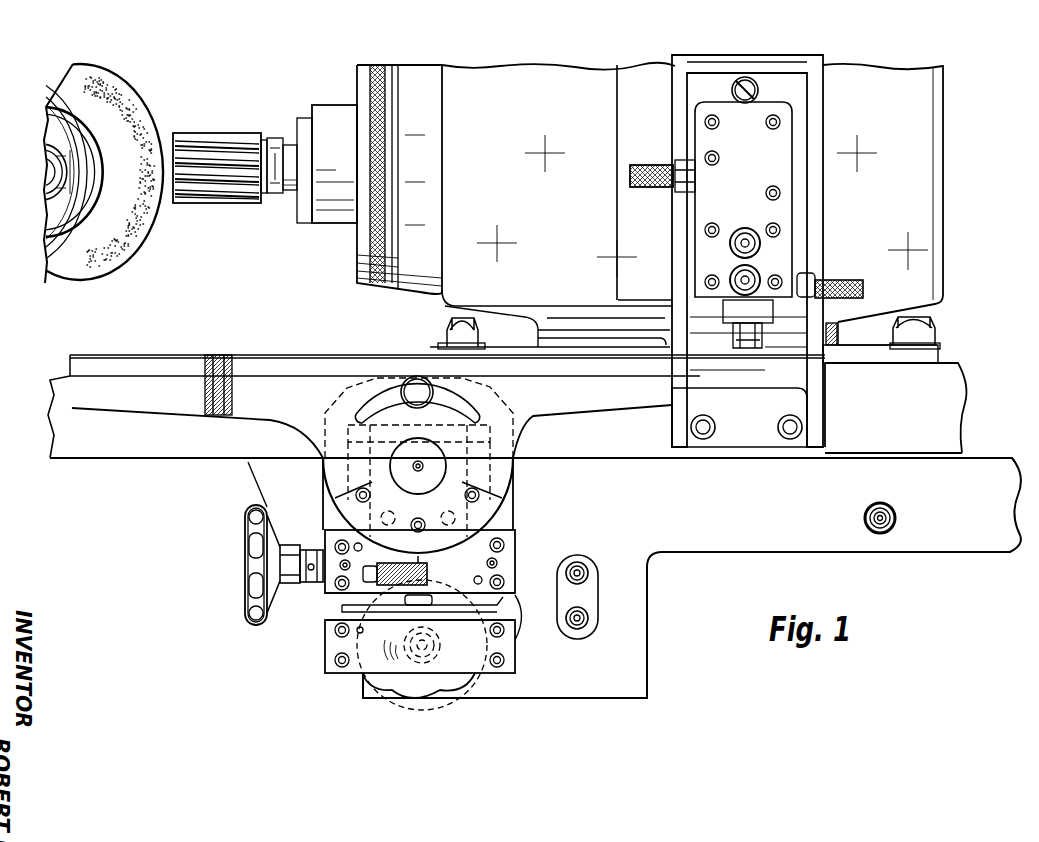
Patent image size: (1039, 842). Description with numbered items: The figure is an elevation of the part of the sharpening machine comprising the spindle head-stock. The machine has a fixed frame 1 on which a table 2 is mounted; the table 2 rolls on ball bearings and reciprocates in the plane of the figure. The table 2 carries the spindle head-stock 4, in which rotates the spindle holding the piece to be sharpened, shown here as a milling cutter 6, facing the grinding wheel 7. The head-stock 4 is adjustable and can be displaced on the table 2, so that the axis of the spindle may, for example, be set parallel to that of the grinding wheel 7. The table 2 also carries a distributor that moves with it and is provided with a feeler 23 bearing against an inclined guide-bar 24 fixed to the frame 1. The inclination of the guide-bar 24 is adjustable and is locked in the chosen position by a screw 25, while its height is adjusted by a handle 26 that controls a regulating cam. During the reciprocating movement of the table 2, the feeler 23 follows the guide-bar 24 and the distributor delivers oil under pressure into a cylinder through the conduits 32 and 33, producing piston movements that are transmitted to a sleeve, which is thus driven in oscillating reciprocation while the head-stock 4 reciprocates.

The fixed frame 1 is at (985, 467).
The table 2 is at (947, 390).
The spindle head-stock 4 is at (922, 134).
The milling cutter 6 is at (215, 142).
The grinding wheel 7 is at (127, 101).
The feeler 23 is at (745, 350).
The inclined guide-bar 24 is at (273, 366).
The screw 25 is at (247, 563).
The handle 26 is at (382, 682).
The conduit 32 is at (745, 229).
The conduit 33 is at (733, 275).